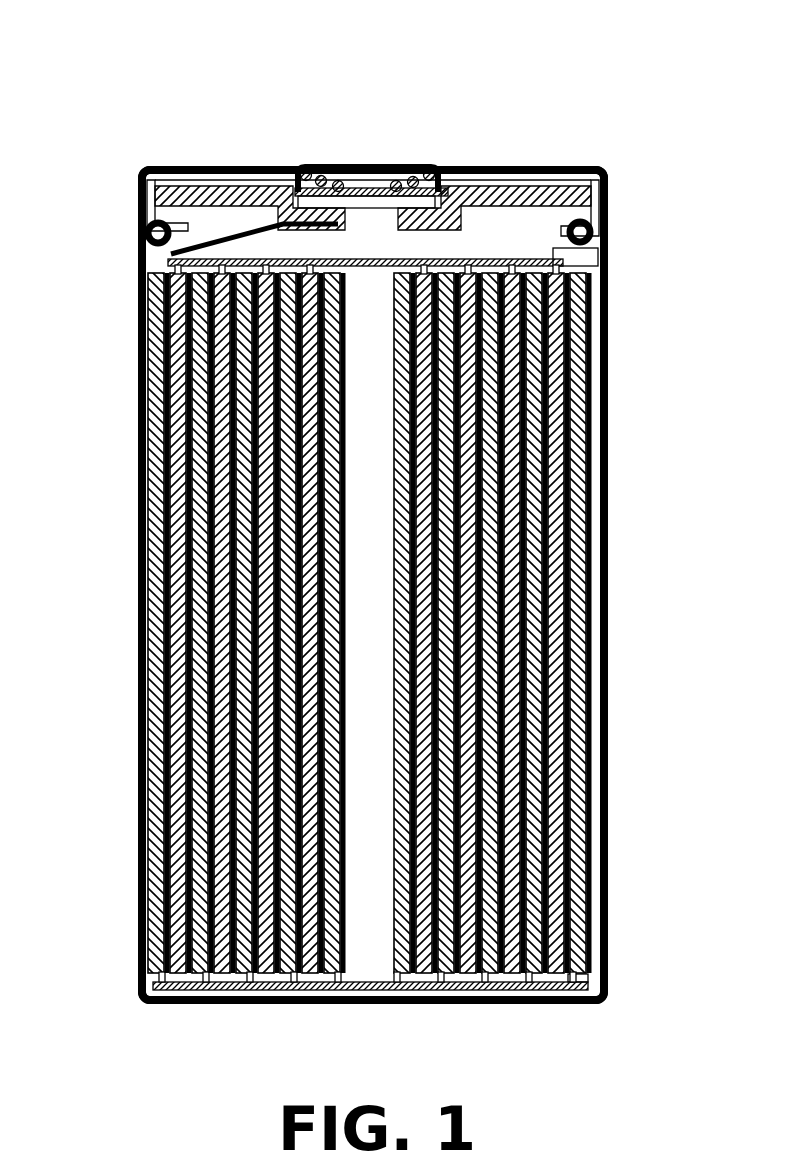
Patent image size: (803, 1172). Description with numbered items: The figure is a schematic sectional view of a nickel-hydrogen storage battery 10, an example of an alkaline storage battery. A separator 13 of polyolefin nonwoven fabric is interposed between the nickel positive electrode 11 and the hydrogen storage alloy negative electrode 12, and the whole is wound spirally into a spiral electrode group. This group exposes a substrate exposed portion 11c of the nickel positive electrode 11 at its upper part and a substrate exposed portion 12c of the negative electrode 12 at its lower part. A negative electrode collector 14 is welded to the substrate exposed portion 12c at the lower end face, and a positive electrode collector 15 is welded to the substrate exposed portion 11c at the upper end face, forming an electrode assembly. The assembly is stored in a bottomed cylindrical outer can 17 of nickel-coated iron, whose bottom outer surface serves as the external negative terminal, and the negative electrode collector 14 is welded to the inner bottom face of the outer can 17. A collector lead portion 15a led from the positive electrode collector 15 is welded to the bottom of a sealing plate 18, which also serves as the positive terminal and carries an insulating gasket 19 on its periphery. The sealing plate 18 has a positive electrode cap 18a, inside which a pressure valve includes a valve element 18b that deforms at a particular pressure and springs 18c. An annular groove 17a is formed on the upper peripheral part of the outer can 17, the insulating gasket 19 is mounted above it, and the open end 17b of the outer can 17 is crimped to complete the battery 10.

The nickel-hydrogen storage battery 10 is at (245, 97).
The nickel positive electrode 11 is at (600, 463).
The substrate exposed portion 11c is at (596, 258).
The hydrogen storage alloy negative electrode 12 is at (582, 568).
The substrate exposed portion 12c is at (583, 973).
The separator 13 is at (572, 672).
The negative electrode collector 14 is at (444, 982).
The positive electrode collector 15 is at (524, 252).
The collector lead portion 15a is at (265, 232).
The outer can 17 is at (130, 432).
The annular groove 17a is at (132, 227).
The open end 17b is at (568, 160).
The sealing plate 18 is at (460, 183).
The positive electrode cap 18a is at (297, 162).
The valve element 18b is at (335, 170).
The springs 18c is at (420, 158).
The insulating gasket 19 is at (136, 202).